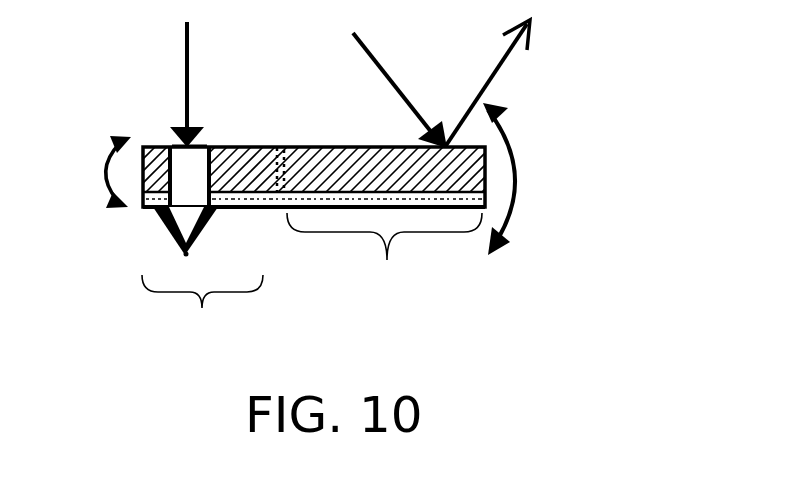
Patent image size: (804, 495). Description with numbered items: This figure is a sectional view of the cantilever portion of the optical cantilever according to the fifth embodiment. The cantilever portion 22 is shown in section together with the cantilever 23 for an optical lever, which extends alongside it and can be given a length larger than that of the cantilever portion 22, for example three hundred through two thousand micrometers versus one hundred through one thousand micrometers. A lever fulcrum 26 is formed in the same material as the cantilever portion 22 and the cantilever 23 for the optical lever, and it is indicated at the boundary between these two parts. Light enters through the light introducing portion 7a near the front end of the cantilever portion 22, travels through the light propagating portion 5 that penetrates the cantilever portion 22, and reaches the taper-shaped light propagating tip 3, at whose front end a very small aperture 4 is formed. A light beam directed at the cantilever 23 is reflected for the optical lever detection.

The light introducing portion 7a is at (180, 146).
The light propagating portion 5 is at (227, 207).
The lever fulcrum 26 is at (279, 146).
The light propagating tip 3 is at (225, 207).
The very small aperture 4 is at (184, 256).
The cantilever portion 22 is at (202, 315).
The cantilever for an optical lever 23 is at (384, 258).